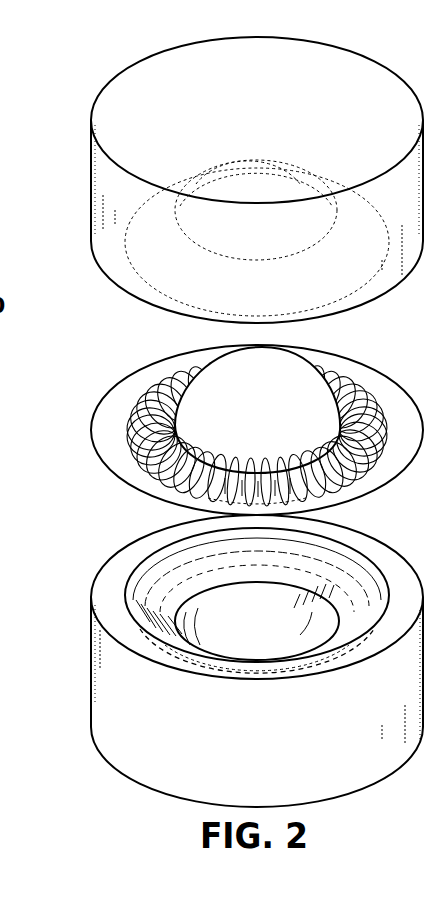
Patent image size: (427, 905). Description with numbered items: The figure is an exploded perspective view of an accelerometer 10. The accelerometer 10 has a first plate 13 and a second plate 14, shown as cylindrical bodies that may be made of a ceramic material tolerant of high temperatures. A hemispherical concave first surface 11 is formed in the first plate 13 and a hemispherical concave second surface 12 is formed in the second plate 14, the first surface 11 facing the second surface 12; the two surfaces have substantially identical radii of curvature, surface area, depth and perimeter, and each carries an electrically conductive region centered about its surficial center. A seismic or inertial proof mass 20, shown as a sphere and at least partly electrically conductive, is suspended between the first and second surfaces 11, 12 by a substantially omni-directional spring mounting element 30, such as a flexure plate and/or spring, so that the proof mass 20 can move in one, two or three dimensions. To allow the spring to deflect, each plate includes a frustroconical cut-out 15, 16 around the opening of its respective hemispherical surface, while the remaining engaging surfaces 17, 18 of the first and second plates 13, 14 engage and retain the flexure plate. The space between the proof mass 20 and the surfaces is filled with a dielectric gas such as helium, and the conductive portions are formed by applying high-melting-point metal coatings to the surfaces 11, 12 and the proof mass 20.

The accelerometer 10 is at (52, 98).
The first surface 11 is at (217, 172).
The second surface 12 is at (245, 680).
The first plate 13 is at (131, 97).
The second plate 14 is at (130, 728).
The frustroconical cut-out 15 is at (156, 249).
The frustroconical cut-out 16 is at (133, 606).
The engaging surface 17 is at (91, 255).
The engaging surface 18 is at (90, 596).
The proof mass 20 is at (213, 393).
The spring mounting element 30 is at (97, 452).